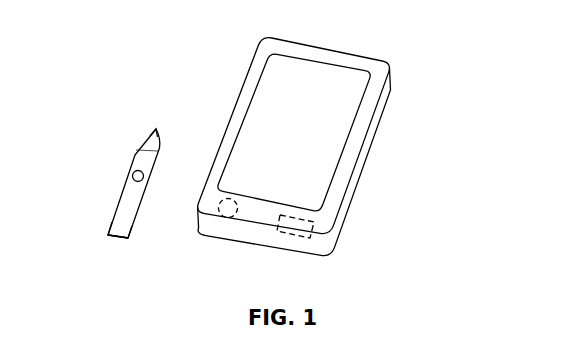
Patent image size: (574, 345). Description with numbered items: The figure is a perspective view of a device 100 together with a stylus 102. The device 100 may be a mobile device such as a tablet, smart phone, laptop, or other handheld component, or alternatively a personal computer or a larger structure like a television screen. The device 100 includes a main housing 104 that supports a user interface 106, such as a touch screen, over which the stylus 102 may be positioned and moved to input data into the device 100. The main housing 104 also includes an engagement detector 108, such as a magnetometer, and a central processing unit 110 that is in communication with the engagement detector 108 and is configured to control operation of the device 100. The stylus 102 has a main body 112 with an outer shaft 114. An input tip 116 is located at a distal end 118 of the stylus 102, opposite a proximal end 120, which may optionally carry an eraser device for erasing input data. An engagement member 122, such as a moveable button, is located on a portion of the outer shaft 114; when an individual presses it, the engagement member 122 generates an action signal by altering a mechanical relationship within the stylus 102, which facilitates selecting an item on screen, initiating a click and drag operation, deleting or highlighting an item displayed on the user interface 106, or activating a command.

The device 100 is at (430, 48).
The stylus 102 is at (108, 163).
The main housing 104 is at (370, 156).
The user interface 106 is at (333, 113).
The engagement detector 108 is at (227, 218).
The central processing unit 110 is at (305, 232).
The main body 112 is at (111, 221).
The outer shaft 114 is at (132, 210).
The input tip 116 is at (160, 141).
The distal end 118 is at (150, 135).
The proximal end 120 is at (116, 239).
The engagement member 122 is at (144, 178).